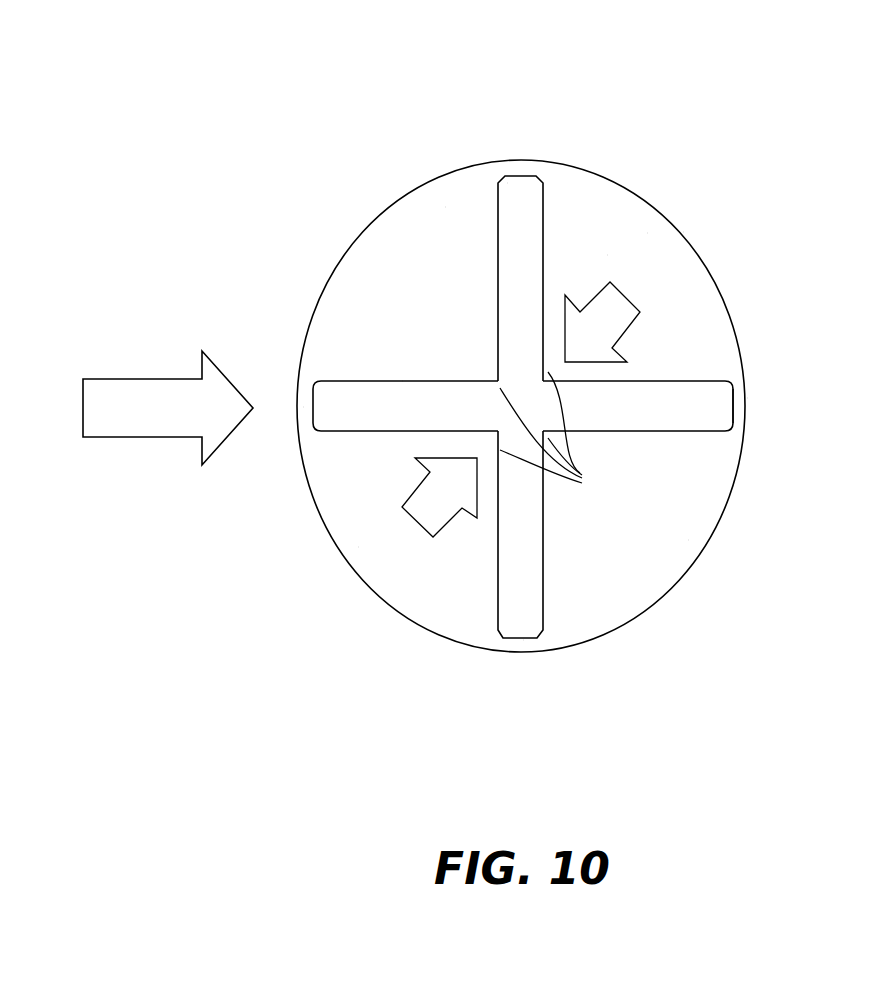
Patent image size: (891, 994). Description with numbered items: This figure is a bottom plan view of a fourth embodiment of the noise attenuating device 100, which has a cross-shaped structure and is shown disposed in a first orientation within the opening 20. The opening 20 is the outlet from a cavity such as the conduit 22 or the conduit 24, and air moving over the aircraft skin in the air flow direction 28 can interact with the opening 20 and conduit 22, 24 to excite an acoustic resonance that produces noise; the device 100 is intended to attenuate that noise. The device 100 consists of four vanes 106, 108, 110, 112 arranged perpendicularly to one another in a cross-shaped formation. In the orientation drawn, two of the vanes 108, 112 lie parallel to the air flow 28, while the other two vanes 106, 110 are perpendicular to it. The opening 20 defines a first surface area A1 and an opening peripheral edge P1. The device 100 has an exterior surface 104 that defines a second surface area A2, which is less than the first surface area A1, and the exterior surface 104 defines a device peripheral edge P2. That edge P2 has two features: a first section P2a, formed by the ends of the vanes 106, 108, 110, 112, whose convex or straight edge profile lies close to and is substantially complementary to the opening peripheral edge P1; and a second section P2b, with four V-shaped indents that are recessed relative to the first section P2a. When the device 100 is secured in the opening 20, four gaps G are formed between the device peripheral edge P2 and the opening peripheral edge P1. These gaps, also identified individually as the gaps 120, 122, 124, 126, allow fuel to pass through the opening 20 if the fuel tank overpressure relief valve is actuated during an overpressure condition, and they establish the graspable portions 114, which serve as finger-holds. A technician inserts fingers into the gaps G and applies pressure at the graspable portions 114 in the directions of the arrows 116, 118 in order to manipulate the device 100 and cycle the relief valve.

The noise attenuating device 100 is at (549, 401).
The opening 20 is at (607, 255).
The conduit 22 is at (518, 401).
The conduit 24 is at (390, 200).
The air flow direction 28 is at (164, 378).
The exterior surface 104 is at (668, 422).
The vane 106 is at (518, 200).
The vane 108 is at (703, 413).
The vane 110 is at (536, 610).
The vane 112 is at (342, 422).
The graspable portions 114 is at (558, 430).
The arrow 116 is at (418, 538).
The arrow 118 is at (622, 313).
The gap 120 is at (647, 233).
The gap 122 is at (688, 540).
The gap 124 is at (358, 547).
The gap 126 is at (445, 207).
The gaps G is at (645, 233).
The first surface area A1 is at (683, 232).
The second surface area A2 is at (507, 183).
The opening peripheral edge P1 is at (747, 398).
The device peripheral edge P2 is at (523, 640).
The first section P2a is at (303, 407).
The second section P2b is at (402, 381).